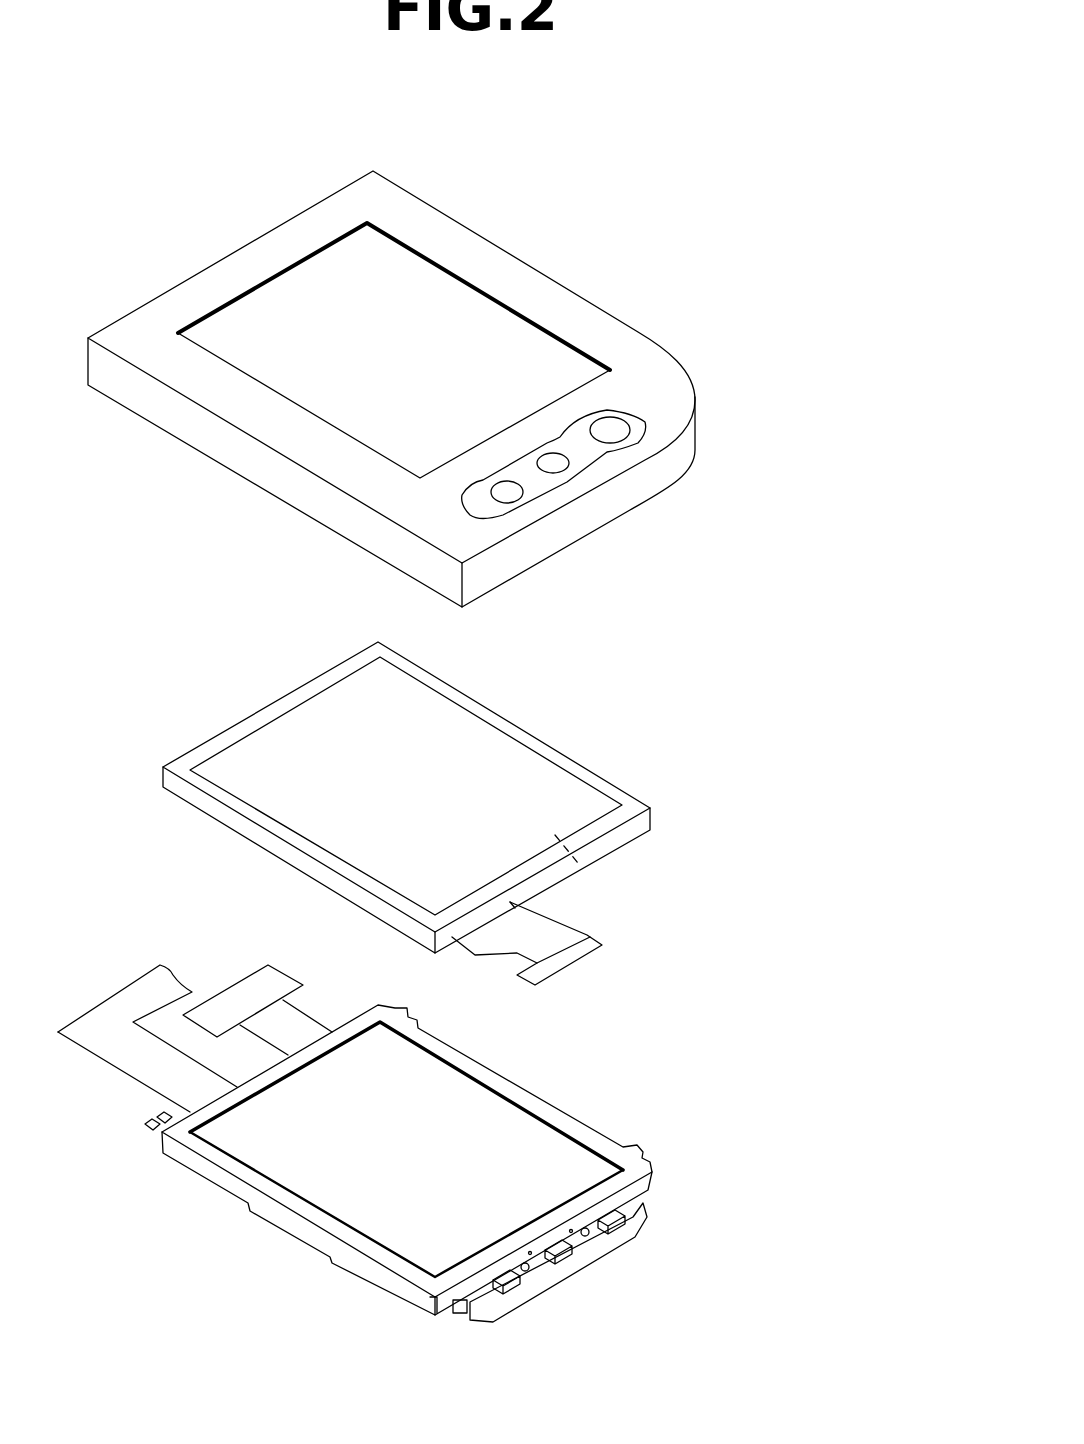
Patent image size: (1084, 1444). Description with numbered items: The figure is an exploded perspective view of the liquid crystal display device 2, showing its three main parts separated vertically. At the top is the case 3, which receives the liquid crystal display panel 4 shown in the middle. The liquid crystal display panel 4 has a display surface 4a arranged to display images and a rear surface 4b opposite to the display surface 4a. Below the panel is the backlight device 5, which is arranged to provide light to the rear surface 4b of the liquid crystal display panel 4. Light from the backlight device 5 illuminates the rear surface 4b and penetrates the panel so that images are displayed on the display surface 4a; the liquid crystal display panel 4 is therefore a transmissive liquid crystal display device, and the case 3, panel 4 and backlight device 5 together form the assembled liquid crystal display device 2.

The liquid crystal display device 2 is at (903, 722).
The case 3 is at (655, 508).
The liquid crystal display panel 4 is at (533, 813).
The display surface 4a is at (543, 780).
The rear surface 4b is at (570, 926).
The backlight device 5 is at (565, 1108).